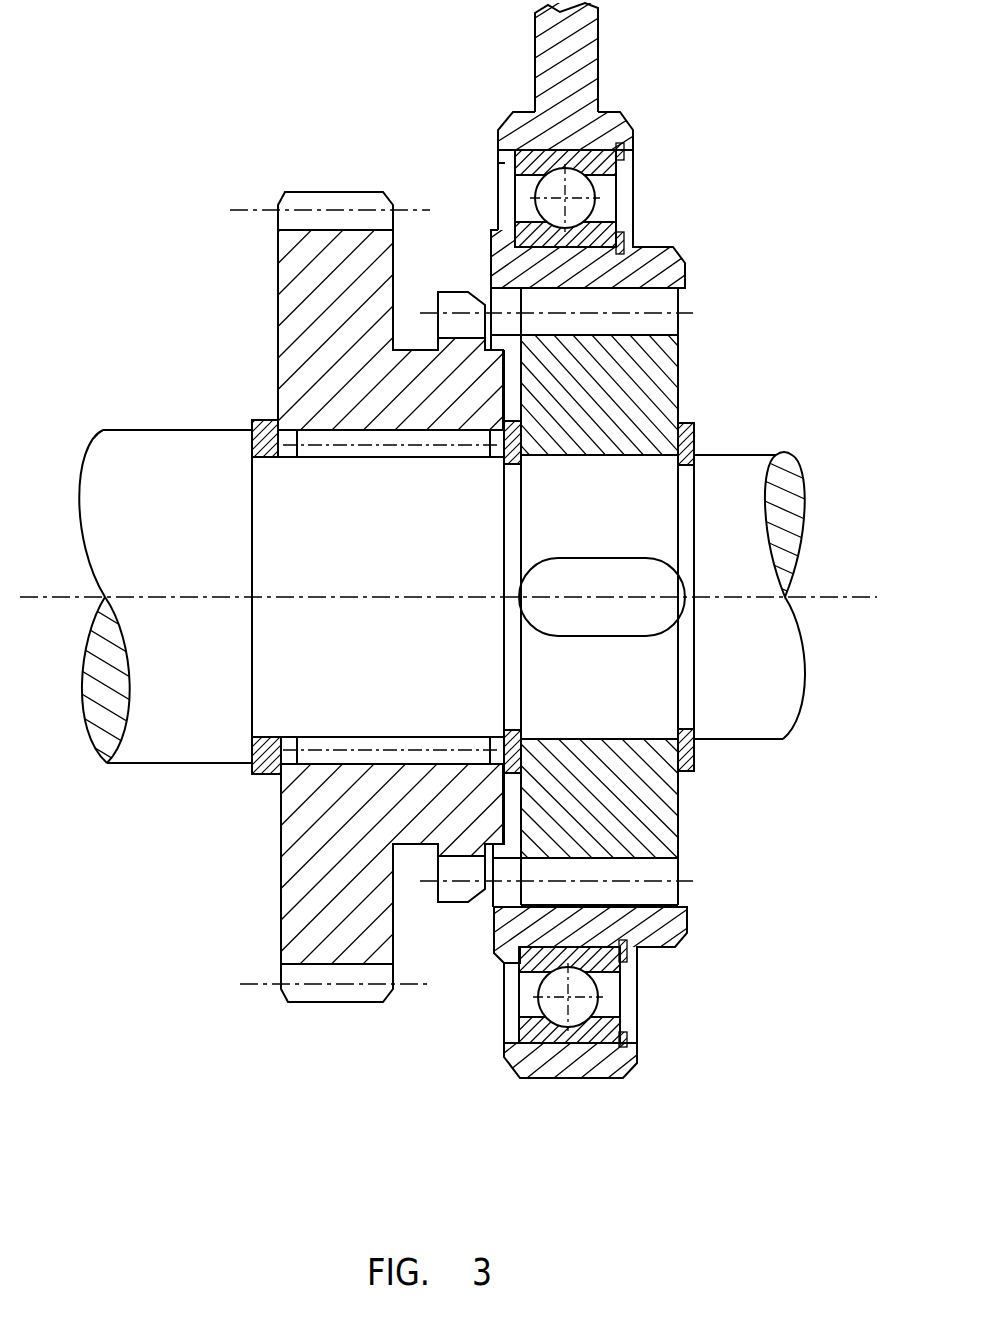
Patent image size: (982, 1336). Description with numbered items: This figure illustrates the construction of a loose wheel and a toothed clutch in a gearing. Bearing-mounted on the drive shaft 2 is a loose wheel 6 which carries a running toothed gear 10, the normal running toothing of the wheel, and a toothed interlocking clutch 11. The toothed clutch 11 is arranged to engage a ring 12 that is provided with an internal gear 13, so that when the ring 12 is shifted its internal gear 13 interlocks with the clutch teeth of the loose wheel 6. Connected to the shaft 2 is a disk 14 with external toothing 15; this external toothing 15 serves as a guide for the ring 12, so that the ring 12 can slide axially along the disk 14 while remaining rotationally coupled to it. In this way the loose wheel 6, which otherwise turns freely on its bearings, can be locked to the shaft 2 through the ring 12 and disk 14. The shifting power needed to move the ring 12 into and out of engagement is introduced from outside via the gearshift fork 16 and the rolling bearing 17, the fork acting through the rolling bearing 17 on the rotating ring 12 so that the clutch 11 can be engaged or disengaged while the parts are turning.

The drive shaft 2 is at (175, 738).
The loose wheel 6 is at (298, 872).
The running toothed gear 10 is at (358, 1002).
The toothed clutch 11 is at (452, 895).
The ring 12 is at (653, 933).
The internal gear 13 is at (502, 890).
The disk 14 is at (647, 837).
The external toothing 15 is at (667, 891).
The gearshift fork 16 is at (577, 63).
The ball bearing 17 is at (580, 210).